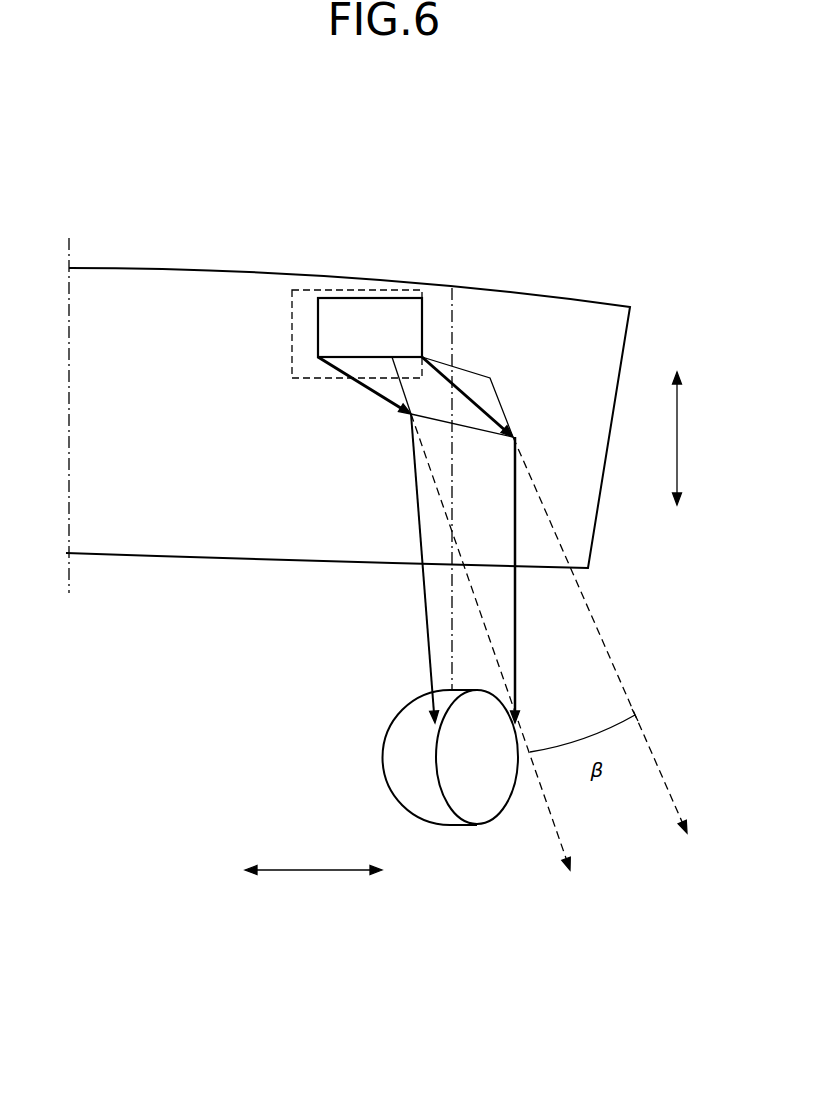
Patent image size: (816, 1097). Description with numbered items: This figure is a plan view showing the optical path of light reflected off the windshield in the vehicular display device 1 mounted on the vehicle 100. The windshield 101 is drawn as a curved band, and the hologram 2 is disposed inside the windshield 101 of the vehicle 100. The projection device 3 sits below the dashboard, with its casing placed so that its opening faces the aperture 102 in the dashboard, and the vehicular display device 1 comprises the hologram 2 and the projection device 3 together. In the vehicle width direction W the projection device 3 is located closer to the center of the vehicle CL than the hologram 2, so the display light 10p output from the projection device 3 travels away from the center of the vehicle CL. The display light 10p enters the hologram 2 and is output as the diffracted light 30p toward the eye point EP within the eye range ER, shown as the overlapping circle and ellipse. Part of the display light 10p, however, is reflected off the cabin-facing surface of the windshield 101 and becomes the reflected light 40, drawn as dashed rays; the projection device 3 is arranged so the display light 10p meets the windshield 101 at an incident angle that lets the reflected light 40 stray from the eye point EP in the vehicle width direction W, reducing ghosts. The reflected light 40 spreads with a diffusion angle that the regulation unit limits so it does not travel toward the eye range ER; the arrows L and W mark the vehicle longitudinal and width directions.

The vehicular display device 1 is at (423, 170).
The hologram 2 is at (488, 340).
The projection device 3 is at (348, 290).
The vehicle 100 is at (542, 158).
The windshield 101 is at (571, 317).
The aperture 102 is at (318, 323).
The display light 10p is at (367, 390).
The diffracted light 30p is at (427, 625).
The reflected light 40 is at (552, 818).
The center of the vehicle CL is at (72, 254).
The vehicle longitudinal direction L is at (688, 438).
The vehicle width direction W is at (313, 857).
The eye range ER is at (407, 810).
The eye point EP is at (445, 803).